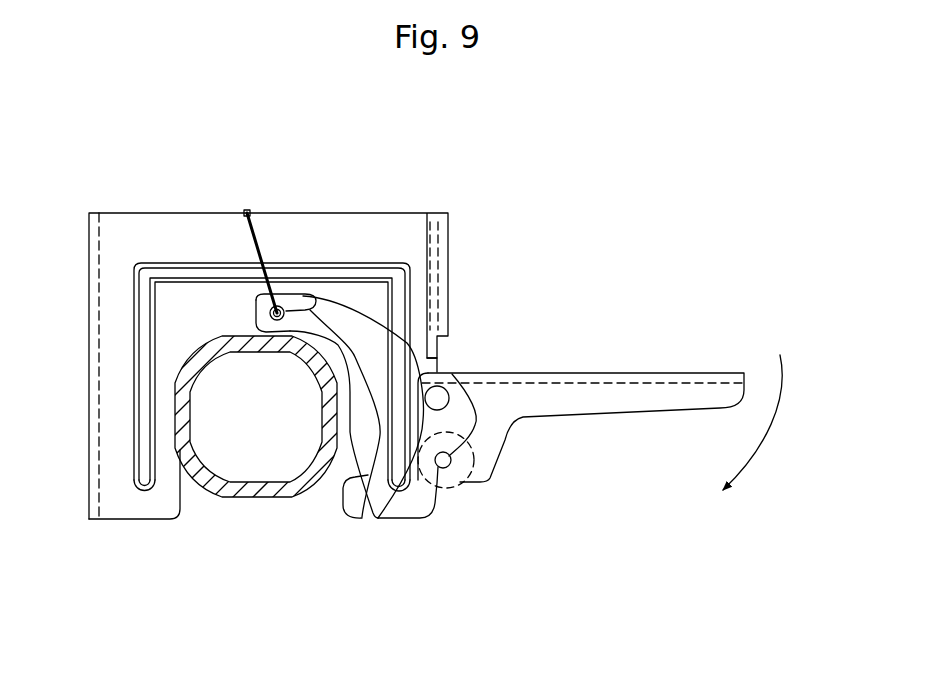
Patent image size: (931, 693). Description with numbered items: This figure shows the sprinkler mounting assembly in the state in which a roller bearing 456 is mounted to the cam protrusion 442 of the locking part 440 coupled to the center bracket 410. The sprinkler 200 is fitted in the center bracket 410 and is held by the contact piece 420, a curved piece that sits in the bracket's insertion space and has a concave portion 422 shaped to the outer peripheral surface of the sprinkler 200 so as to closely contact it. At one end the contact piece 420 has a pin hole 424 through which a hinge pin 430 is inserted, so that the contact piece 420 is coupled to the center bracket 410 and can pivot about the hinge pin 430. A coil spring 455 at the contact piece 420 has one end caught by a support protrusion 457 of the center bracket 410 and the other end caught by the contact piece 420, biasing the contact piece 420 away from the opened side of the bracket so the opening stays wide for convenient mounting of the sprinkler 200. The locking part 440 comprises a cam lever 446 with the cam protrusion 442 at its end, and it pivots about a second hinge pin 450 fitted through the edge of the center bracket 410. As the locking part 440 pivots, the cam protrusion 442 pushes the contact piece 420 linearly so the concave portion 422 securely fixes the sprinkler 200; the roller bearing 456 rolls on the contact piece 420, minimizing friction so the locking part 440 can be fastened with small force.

The sprinkler 200 is at (250, 500).
The center bracket 410 is at (125, 557).
The contact piece 420 is at (356, 520).
The concave portion 422 is at (364, 387).
The pin hole 424 is at (262, 292).
The hinge pin 430 is at (335, 305).
The locking part 440 is at (581, 407).
The cam protrusion 442 is at (500, 450).
The cam lever 446 is at (643, 397).
The hinge pin 450 is at (437, 398).
The coil spring 455 is at (270, 310).
The roller bearing 456 is at (453, 475).
The support protrusion 457 is at (247, 210).